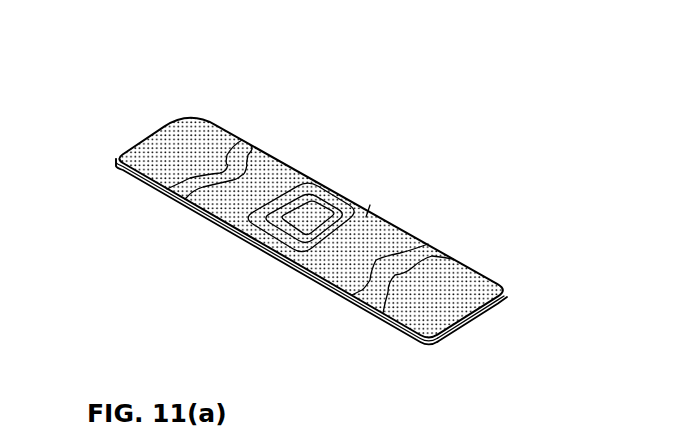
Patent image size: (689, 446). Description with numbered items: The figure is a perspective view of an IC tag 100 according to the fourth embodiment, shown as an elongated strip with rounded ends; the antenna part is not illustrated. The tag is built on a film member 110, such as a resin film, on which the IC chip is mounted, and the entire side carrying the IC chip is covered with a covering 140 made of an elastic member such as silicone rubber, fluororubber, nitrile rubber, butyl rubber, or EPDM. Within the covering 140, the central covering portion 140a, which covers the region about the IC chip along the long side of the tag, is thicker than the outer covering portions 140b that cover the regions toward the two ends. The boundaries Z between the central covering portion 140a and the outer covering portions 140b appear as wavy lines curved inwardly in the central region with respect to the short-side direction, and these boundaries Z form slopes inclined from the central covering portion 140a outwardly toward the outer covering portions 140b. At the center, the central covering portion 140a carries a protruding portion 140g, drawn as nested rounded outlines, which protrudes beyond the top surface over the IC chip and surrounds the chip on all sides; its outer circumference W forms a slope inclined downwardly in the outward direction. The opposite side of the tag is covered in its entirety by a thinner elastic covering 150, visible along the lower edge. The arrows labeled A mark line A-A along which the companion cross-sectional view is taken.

The IC tag 100 is at (150, 78).
The film member 110 is at (328, 289).
The covering 140 is at (200, 207).
The central covering portion 140a is at (282, 167).
The outer covering portion 140b is at (124, 167).
The protruding portion 140g is at (346, 192).
The covering 150 is at (378, 316).
The outer circumference W is at (368, 214).
The boundaries Z is at (245, 142).
The line A- A is at (135, 116).